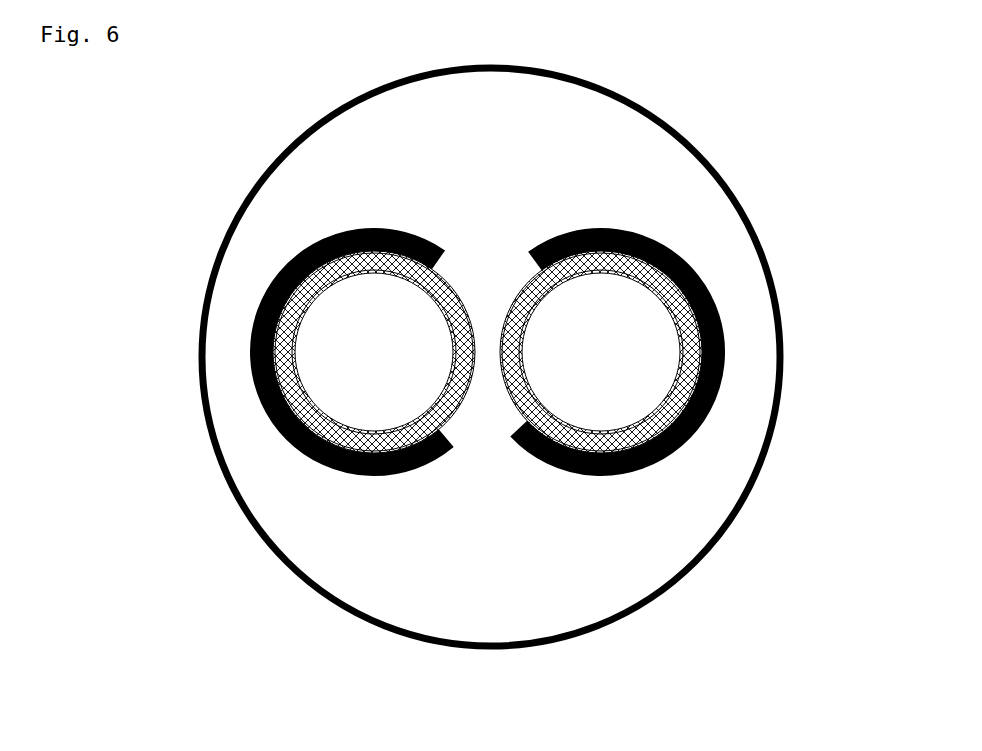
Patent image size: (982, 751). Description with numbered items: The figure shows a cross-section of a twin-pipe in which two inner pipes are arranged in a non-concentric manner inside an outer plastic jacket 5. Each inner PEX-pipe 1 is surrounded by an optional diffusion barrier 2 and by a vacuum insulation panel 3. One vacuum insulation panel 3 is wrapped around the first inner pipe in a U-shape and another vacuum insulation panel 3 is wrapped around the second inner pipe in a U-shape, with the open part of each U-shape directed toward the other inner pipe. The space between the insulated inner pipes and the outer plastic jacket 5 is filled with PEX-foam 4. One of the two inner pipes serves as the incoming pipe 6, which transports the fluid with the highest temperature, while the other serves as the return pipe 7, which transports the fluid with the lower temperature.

The inner PEX-pipe 1 is at (517, 353).
The optional diffusion barrier 2 is at (658, 250).
The vacuum insulation panel 3 is at (697, 274).
The PEX-foam 4 is at (733, 278).
The outer plastic jacket 5 is at (780, 310).
The incoming pipe 6 is at (668, 306).
The return pipe 7 is at (370, 352).